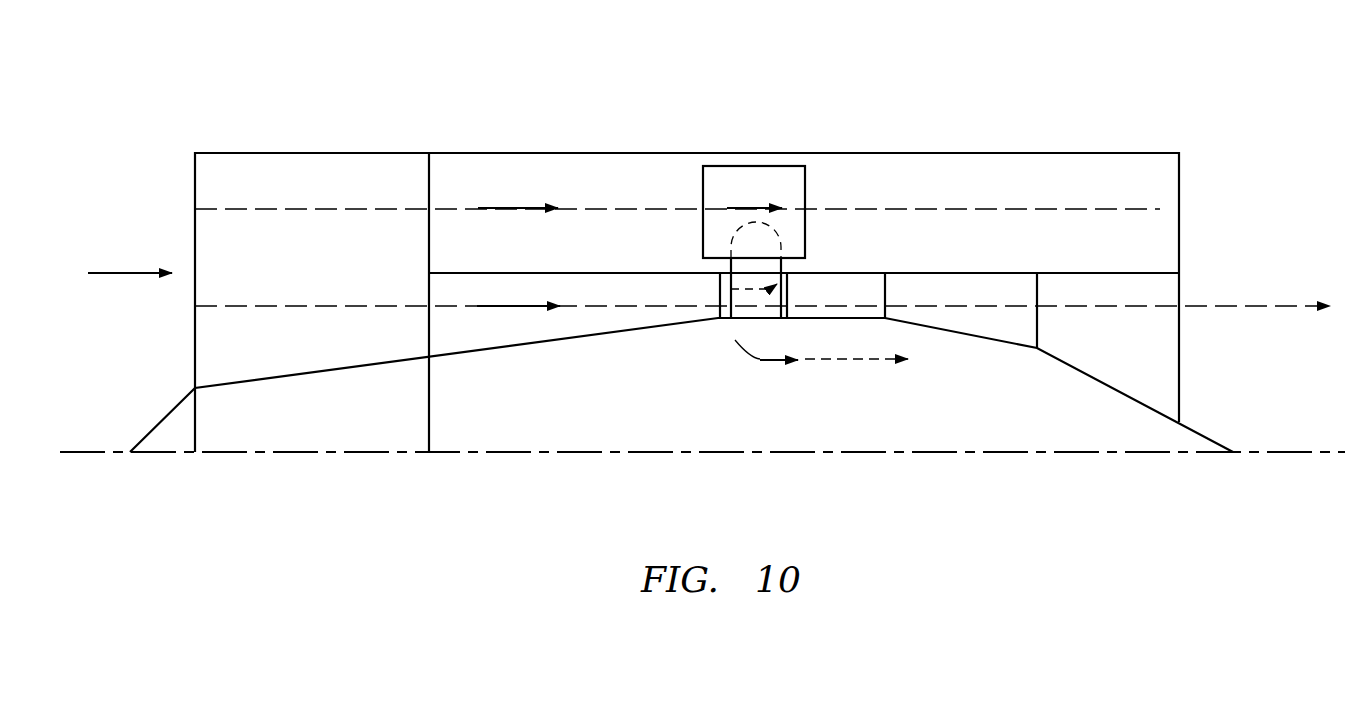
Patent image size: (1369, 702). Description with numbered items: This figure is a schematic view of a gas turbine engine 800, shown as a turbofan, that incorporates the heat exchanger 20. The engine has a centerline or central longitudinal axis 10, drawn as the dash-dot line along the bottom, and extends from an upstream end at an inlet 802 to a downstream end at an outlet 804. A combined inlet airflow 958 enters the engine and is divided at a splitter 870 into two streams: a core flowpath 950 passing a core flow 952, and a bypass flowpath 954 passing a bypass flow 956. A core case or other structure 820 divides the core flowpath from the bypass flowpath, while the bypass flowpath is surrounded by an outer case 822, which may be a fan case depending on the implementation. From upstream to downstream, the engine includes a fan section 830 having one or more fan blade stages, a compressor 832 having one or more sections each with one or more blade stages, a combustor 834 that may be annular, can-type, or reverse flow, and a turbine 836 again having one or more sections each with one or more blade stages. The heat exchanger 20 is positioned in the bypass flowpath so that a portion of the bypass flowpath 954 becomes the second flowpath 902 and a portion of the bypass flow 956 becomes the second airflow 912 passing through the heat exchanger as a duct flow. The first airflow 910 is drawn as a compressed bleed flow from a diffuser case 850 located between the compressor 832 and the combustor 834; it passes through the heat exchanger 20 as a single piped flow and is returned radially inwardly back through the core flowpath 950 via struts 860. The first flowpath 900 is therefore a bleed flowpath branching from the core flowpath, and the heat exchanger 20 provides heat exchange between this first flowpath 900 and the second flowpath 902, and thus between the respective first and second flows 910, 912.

The central longitudinal axis 10 is at (1318, 452).
The heat exchanger 20 is at (793, 183).
The gas turbine engine 800 is at (988, 77).
The inlet 802 is at (160, 357).
The outlet 804 is at (1243, 265).
The core case 820 is at (1005, 273).
The outer case 822 is at (460, 153).
The fan section 830 is at (335, 192).
The compressor 832 is at (597, 318).
The combustor 834 is at (842, 312).
The turbine 836 is at (1002, 317).
The diffuser case 850 is at (778, 297).
The struts 860 is at (720, 296).
The splitter 870 is at (429, 272).
The first flowpath 900 is at (731, 318).
The second flowpath 902 is at (713, 207).
The first flow 910 is at (762, 360).
The second flow 912 is at (745, 205).
The core flowpath 950 is at (458, 306).
The core flow 952 is at (513, 306).
The bypass flowpath 954 is at (592, 208).
The bypass flow 956 is at (508, 208).
The combined inlet airflow 958 is at (109, 273).